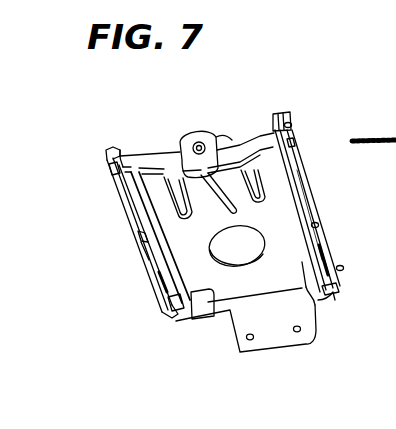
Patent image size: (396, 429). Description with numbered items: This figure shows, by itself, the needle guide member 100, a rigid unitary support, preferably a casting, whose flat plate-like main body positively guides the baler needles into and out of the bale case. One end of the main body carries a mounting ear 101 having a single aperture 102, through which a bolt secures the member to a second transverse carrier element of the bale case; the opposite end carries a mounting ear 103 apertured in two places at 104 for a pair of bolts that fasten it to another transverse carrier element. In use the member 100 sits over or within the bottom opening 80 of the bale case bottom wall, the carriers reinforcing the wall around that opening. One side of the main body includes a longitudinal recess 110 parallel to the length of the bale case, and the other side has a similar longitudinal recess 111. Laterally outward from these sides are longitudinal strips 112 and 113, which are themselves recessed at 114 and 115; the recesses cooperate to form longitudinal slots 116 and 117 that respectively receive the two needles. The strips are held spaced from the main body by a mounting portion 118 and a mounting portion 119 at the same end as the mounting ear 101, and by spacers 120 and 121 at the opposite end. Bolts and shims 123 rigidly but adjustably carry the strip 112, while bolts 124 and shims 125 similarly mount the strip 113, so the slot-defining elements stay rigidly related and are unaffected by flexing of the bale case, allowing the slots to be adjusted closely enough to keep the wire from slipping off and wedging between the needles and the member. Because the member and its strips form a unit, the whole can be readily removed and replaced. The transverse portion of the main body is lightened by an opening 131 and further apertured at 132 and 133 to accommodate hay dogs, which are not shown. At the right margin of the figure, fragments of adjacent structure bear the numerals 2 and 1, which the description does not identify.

The needle guide member 100 is at (153, 150).
The mounting ear 101 is at (197, 140).
The aperture 102 is at (222, 126).
The mounting ear 103 is at (283, 338).
The apertures 104 is at (250, 341).
The longitudinal recess 110 is at (152, 270).
The longitudinal recess 111 is at (313, 243).
The longitudinal strip 112 is at (138, 233).
The longitudinal strip 113 is at (314, 188).
The longitudinal recess 114 is at (141, 242).
The longitudinal recess 115 is at (315, 222).
The longitudinal slot 116 is at (160, 282).
The longitudinal slot 117 is at (318, 246).
The mounting portion 118 is at (121, 149).
The mounting portion 119 is at (277, 113).
The spacer 120 is at (178, 322).
The spacer 121 is at (333, 297).
The shims 123 is at (110, 167).
The bolts 124 is at (296, 126).
The shims 125 is at (298, 137).
The opening 131 is at (252, 268).
The aperture 132 is at (211, 318).
The aperture 133 is at (175, 146).
The bottom opening 80 is at (374, 160).
The adjacent member 2 is at (385, 138).
The adjacent member 1 is at (392, 189).